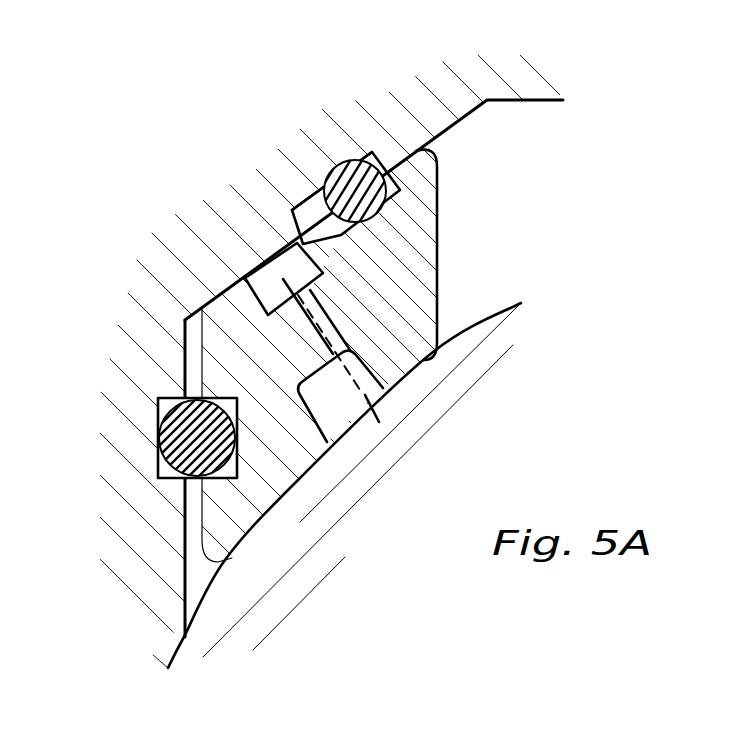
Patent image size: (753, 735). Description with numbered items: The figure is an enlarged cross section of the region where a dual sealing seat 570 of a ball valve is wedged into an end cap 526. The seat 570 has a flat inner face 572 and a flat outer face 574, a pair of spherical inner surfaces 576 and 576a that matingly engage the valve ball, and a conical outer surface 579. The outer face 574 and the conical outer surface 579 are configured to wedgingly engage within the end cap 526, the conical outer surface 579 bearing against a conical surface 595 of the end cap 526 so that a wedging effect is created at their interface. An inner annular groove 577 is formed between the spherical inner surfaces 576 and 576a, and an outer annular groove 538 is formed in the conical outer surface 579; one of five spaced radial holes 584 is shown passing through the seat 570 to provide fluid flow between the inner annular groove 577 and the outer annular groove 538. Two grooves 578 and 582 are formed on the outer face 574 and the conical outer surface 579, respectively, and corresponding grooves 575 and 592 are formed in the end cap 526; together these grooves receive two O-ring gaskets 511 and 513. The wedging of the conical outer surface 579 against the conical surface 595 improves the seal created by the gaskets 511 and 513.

The O-ring gasket 511 is at (180, 450).
The O-ring gasket 513 is at (358, 180).
The end cap 526 is at (137, 577).
The outer annular groove 538 is at (268, 282).
The dual sealing seat 570 is at (410, 335).
The inner face 572 is at (437, 262).
The outer face 574 is at (208, 545).
The groove 575 is at (157, 407).
The spherical inner surface 576 is at (253, 533).
The spherical inner surface 576a is at (400, 387).
The inner annular groove 577 is at (327, 423).
The groove 578 is at (237, 413).
The conical outer surface 579 is at (222, 290).
The groove 582 is at (392, 186).
The radial hole 584 is at (323, 337).
The groove 592 is at (298, 207).
The conical surface 595 is at (470, 121).